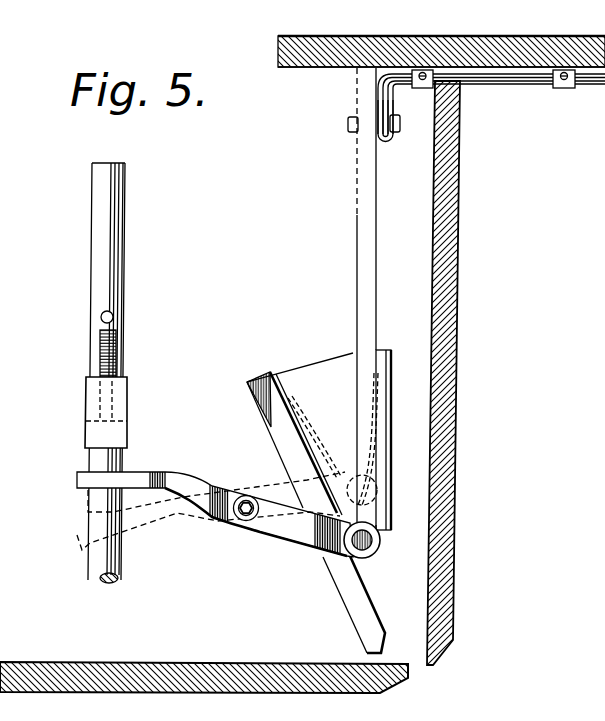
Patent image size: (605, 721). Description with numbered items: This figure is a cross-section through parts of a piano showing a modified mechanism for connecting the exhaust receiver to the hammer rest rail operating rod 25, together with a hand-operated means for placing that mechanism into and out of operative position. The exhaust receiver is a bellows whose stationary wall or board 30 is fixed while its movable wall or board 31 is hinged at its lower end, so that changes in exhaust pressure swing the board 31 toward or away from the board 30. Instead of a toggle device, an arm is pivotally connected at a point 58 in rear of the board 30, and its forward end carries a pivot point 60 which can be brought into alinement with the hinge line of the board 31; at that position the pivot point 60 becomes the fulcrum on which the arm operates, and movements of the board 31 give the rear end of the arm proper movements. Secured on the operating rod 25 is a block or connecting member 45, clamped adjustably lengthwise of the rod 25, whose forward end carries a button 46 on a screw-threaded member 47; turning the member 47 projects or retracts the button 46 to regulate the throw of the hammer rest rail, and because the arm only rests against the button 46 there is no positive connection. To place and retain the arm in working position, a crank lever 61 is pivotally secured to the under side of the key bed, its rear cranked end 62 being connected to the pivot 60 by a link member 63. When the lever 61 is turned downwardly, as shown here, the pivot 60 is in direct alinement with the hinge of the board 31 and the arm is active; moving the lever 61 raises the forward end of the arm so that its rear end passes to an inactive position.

The hammer rest rail operating rod 25 is at (117, 557).
The stationary wall or board of the reservoir 30 is at (283, 451).
The movable wall or board of the reservoir 31 is at (387, 410).
The block or connecting member 45 is at (126, 424).
The button 46 is at (127, 463).
The screw-threaded member 47 is at (118, 352).
The pivot point 58 is at (243, 522).
The pivot point 60 is at (350, 553).
The crank lever 61 is at (525, 85).
The rear cranked end 62 is at (398, 122).
The link member 63 is at (366, 304).